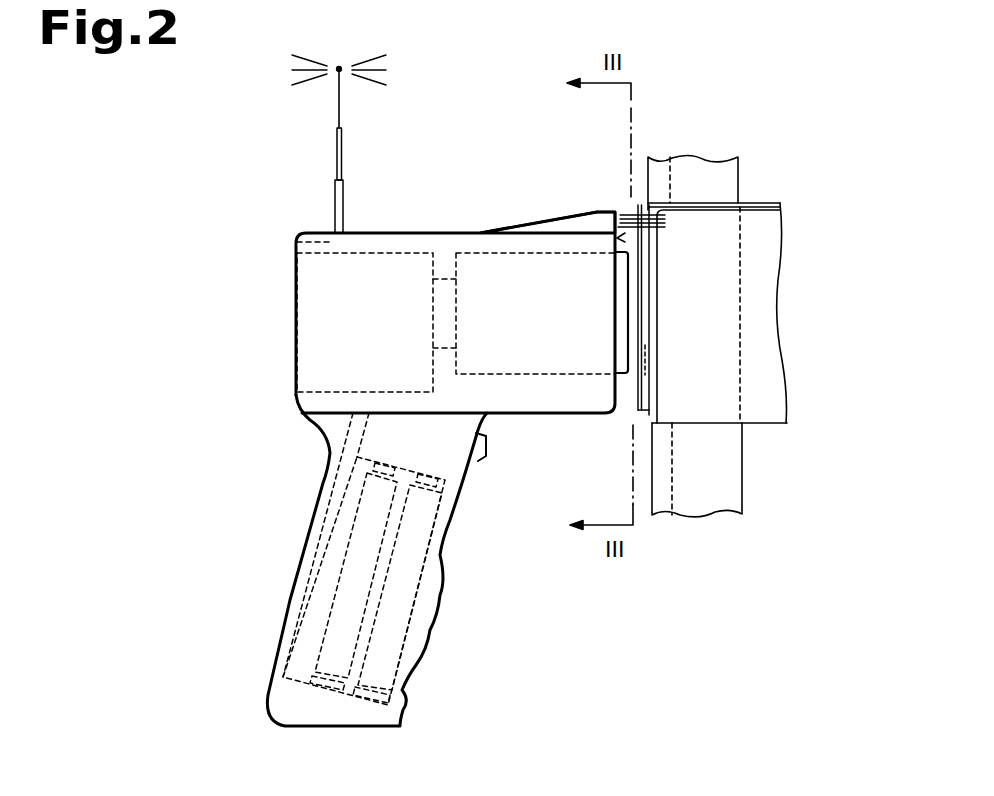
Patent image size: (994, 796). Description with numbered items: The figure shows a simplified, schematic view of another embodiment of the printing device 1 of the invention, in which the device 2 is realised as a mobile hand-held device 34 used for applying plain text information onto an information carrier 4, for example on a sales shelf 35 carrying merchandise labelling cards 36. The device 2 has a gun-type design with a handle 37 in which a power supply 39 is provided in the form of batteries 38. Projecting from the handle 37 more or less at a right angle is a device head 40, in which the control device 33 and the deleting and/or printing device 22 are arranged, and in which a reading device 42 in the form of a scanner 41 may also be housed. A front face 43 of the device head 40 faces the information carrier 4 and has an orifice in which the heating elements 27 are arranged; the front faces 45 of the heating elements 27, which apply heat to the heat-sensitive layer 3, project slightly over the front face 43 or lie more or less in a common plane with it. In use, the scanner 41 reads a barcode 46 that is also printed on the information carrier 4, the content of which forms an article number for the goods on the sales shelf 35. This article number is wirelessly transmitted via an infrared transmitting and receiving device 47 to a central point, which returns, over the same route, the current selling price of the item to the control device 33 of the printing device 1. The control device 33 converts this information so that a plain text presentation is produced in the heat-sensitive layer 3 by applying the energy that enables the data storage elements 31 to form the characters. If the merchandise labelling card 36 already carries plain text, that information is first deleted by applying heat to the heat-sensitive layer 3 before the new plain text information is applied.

The printing device 1 is at (534, 599).
The device 2 is at (488, 165).
The heat-sensitive layer 3 is at (650, 232).
The information carrier 4 is at (609, 434).
The deleting and/or printing device 22 is at (466, 232).
The heating elements 27 is at (623, 276).
The data storage elements 31 is at (670, 366).
The control device 33 is at (372, 344).
The mobile hand-held device 34 is at (245, 216).
The sales shelf 35 is at (806, 187).
The merchandise labelling cards 36 is at (663, 402).
The handle 37 is at (378, 440).
The batteries 38 is at (365, 560).
The power supply 39 is at (296, 632).
The device head 40 is at (447, 247).
The scanner 41 is at (535, 183).
The reading device 42 is at (592, 220).
The front face 43 is at (620, 238).
The front faces of the heat elements 45 is at (636, 328).
The barcode 46 is at (612, 182).
The infrared transmitting and receiving device 47 is at (297, 242).